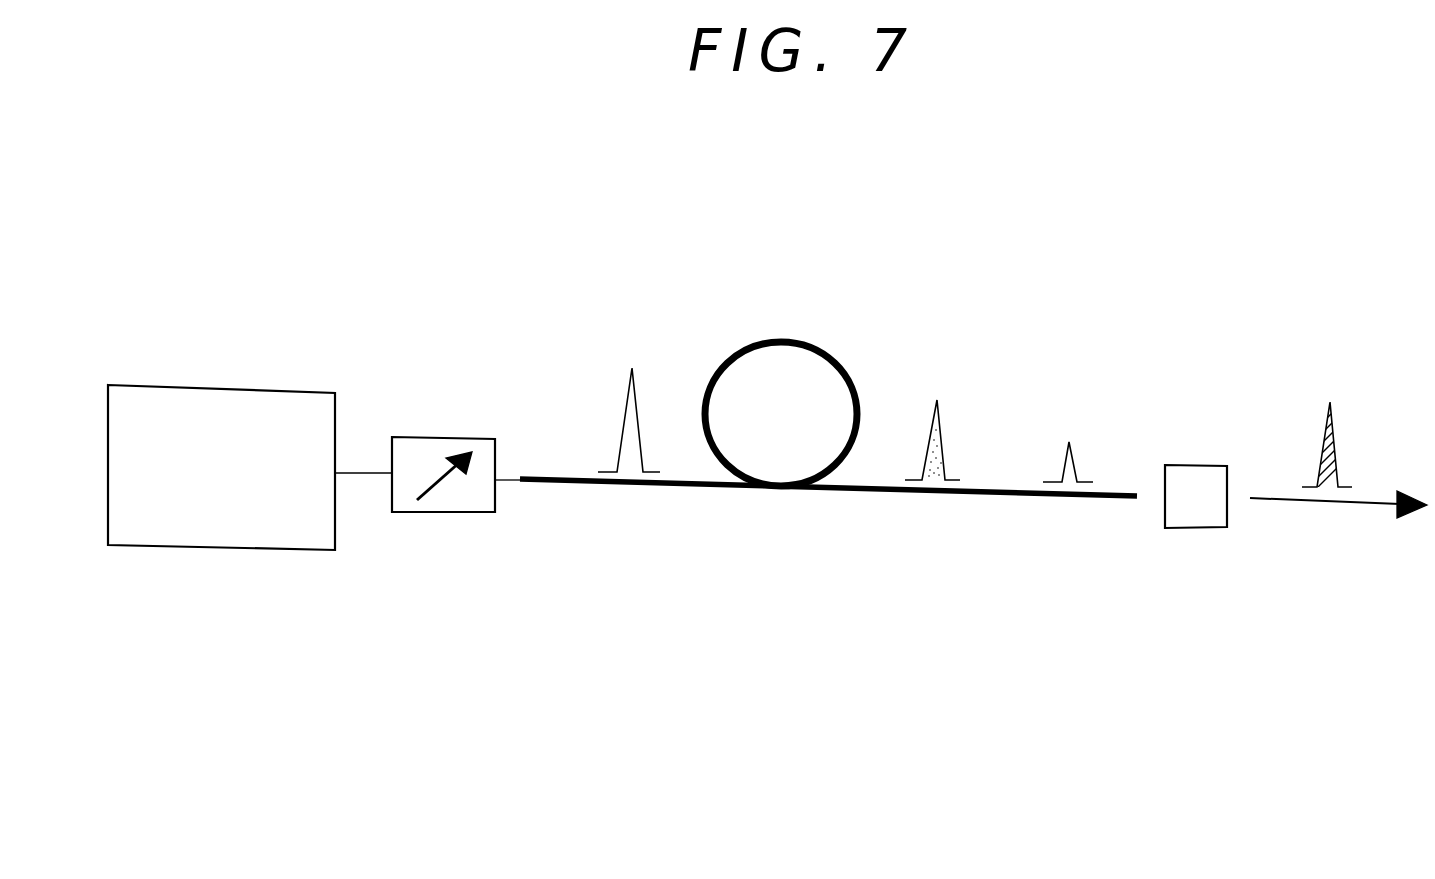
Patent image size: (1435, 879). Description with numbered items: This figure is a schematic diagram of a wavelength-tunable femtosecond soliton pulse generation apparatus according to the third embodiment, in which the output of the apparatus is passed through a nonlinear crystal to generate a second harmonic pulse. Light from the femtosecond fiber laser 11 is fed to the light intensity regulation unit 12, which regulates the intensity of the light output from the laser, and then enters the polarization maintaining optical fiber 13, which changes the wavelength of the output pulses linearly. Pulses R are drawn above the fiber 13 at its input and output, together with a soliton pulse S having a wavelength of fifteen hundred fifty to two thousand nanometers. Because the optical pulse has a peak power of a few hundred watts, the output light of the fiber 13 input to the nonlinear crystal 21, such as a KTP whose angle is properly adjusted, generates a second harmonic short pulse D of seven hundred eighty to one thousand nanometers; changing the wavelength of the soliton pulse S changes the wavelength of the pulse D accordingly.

The femtosecond fiber laser 11 is at (266, 388).
The light intensity regulation unit 12 is at (450, 438).
The polarization maintaining optical fiber 13 is at (990, 498).
The nonlinear crystal 21 is at (1190, 455).
The reference pulse R is at (626, 357).
The soliton pulse S is at (935, 390).
The second harmonic short pulse D is at (1330, 398).